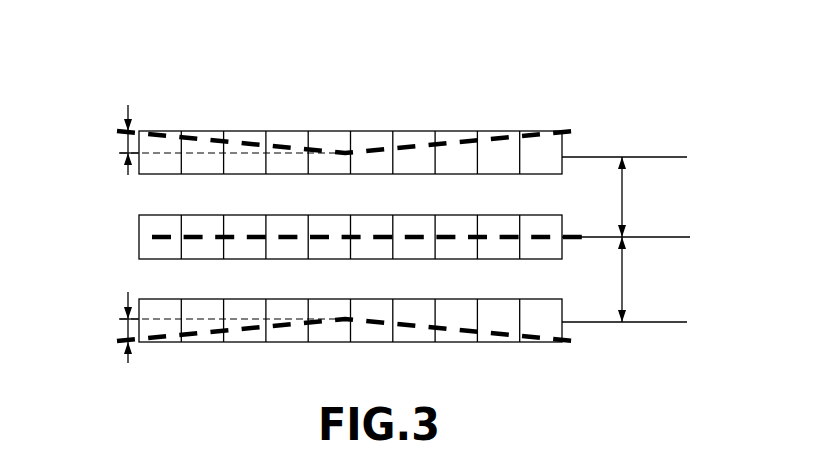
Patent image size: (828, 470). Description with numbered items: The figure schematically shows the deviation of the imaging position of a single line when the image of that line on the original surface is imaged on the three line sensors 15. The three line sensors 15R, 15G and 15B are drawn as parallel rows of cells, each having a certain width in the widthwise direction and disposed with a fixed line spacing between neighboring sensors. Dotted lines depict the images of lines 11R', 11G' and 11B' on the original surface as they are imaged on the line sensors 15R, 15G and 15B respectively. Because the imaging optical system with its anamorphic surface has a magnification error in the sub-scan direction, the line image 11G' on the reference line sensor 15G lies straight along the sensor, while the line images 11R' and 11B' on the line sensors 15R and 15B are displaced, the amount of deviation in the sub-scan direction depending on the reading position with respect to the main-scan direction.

The line sensors 15 is at (550, 93).
The line sensor 15R is at (311, 126).
The line sensor 15G is at (316, 220).
The line sensor 15B is at (311, 345).
The image of line 11R' is at (345, 115).
The image of line 11G' is at (367, 209).
The image of line 11B' is at (345, 358).